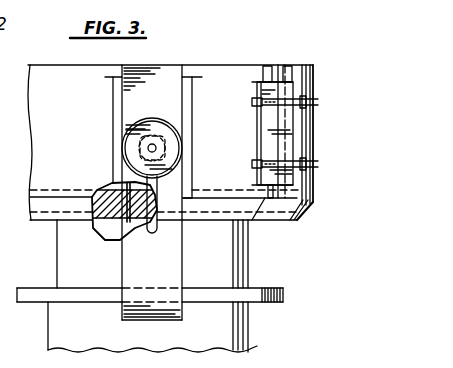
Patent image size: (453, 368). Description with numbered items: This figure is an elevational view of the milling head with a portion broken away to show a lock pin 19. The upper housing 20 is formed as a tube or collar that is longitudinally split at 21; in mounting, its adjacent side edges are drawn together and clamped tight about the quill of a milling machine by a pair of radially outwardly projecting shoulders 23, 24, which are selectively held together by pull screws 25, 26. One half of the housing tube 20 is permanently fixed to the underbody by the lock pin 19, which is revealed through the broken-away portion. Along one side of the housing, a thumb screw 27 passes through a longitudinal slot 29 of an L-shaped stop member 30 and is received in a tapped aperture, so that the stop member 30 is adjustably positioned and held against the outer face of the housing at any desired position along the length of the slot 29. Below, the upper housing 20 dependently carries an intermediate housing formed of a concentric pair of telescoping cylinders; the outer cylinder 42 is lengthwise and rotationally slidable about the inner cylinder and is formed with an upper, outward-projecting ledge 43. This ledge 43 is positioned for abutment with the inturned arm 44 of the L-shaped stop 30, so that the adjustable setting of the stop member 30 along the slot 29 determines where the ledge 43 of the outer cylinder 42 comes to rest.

The lock pin 19 is at (113, 189).
The upper housing 20 is at (204, 66).
The longitudinal split 21 is at (267, 80).
The shoulder 23 is at (267, 122).
The shoulder 24 is at (293, 80).
The pull screw 25 is at (306, 102).
The pull screw 26 is at (306, 165).
The thumb screw 27 is at (175, 148).
The longitudinal slot 29 is at (157, 193).
The L-shaped stop member 30 is at (178, 266).
The outer cylinder 42 is at (248, 326).
The ledge 43 is at (262, 289).
The inturned arm 44 is at (165, 319).